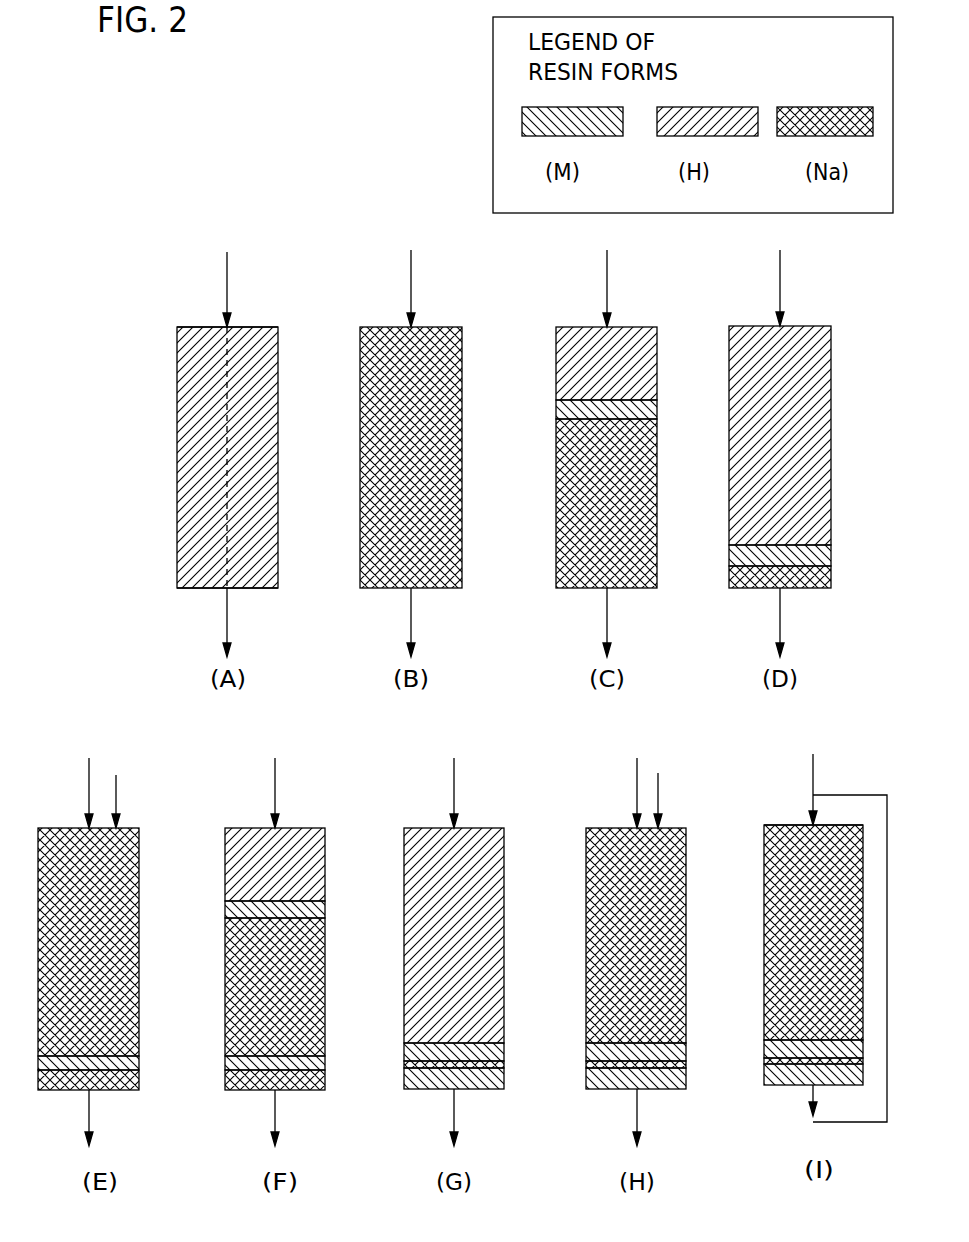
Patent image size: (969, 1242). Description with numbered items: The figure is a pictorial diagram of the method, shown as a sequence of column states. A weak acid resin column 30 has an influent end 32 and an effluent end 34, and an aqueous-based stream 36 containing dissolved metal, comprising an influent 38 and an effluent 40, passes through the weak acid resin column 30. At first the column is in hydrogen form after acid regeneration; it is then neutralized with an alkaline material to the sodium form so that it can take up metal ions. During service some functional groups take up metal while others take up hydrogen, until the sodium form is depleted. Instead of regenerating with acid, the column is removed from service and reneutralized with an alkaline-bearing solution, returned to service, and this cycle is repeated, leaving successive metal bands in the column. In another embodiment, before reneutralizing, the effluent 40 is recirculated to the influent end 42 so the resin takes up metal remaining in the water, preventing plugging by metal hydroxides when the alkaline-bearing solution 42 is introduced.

The weak acid resin column 30 is at (764, 952).
The influent end 32 is at (98, 265).
The effluent end 34 is at (200, 588).
The aqueous-based stream 36 is at (227, 492).
The influent 38 is at (228, 287).
The effluent 40 is at (231, 622).
The influent end (alkaline-bearing solution inlet) 42 is at (116, 775).